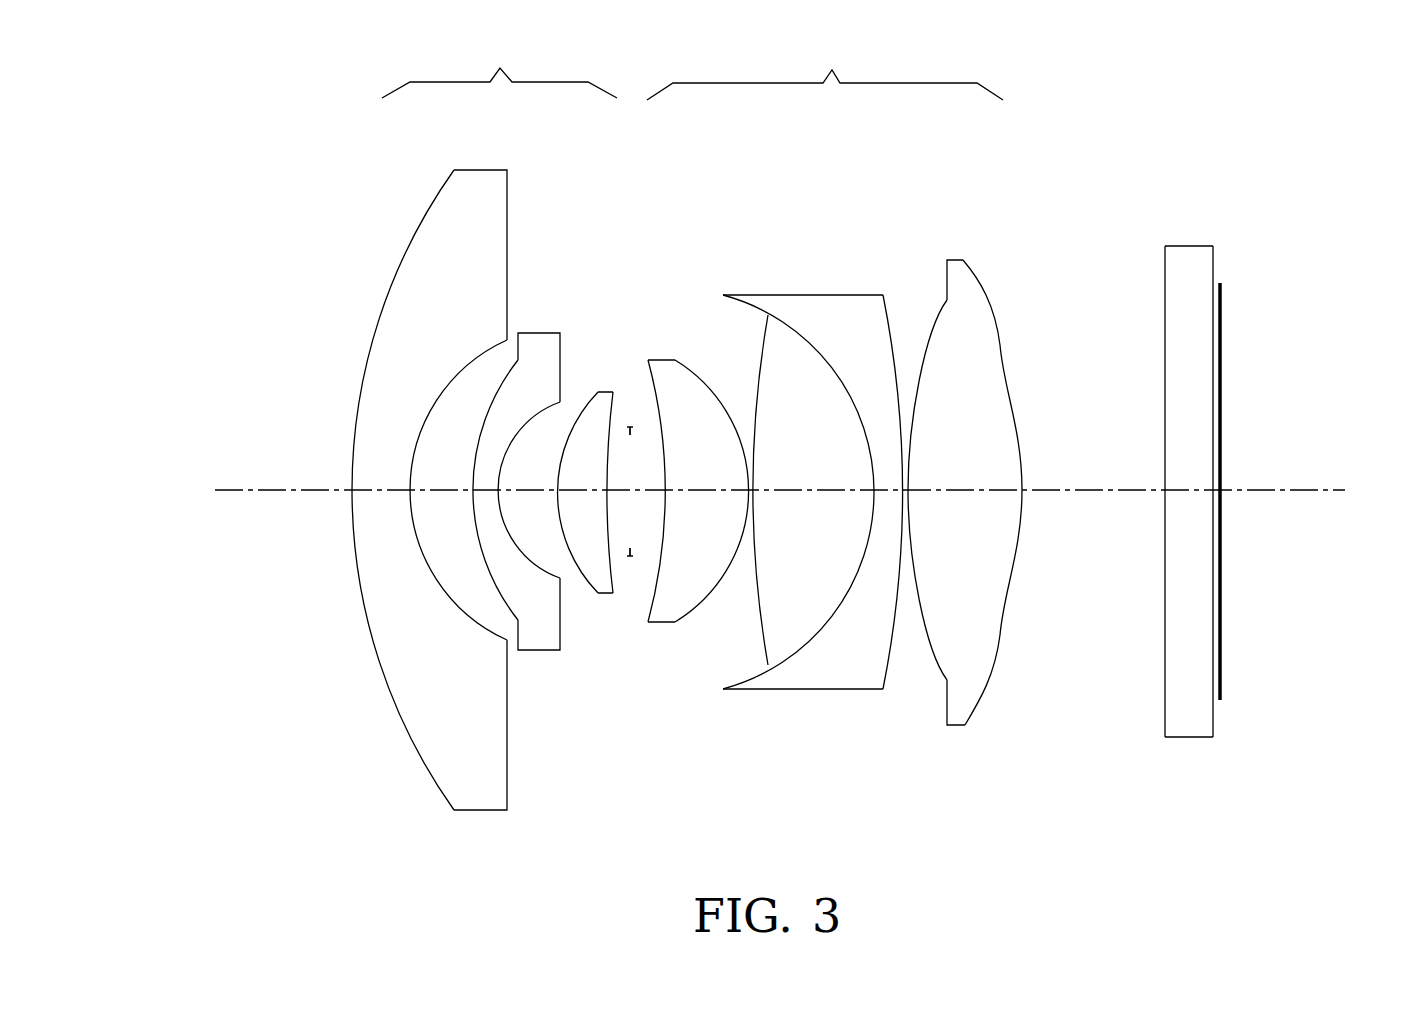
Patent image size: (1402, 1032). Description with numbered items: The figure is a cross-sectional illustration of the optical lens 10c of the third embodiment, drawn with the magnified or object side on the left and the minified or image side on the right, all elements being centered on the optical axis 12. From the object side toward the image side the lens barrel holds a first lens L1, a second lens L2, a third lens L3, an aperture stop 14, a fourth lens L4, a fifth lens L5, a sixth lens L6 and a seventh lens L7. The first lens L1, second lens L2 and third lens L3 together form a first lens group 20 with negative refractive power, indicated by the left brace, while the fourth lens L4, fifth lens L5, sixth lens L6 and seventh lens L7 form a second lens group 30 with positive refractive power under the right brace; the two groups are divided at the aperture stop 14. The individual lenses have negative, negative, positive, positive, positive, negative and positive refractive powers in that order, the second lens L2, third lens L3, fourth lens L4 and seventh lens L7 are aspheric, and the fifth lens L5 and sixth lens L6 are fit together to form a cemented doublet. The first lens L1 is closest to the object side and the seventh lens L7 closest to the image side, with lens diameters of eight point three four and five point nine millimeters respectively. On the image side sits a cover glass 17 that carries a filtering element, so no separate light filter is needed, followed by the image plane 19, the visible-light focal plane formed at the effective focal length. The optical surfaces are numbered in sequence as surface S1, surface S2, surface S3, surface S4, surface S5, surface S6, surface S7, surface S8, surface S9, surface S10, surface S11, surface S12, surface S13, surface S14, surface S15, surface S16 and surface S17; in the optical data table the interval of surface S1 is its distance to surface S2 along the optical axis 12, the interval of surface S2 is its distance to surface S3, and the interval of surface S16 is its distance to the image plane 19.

The optical lens 10c is at (188, 43).
The optical axis 12 is at (288, 492).
The aperture stop 14 is at (630, 428).
The cover glass 17 is at (1188, 258).
The image plane 19 is at (1220, 303).
The first lens group 20 is at (480, 444).
The second lens group 30 is at (841, 411).
The first lens L1 is at (485, 175).
The second lens L2 is at (534, 347).
The third lens L3 is at (608, 387).
The fourth lens L4 is at (656, 368).
The fifth lens L5 is at (762, 378).
The sixth lens L6 is at (822, 302).
The seventh lens L7 is at (955, 272).
The surface S1 is at (397, 713).
The surface S2 is at (507, 645).
The surface S3 is at (512, 618).
The image-side surface of second lens S4 is at (566, 590).
The object-side surface of third lens S5 is at (583, 556).
The image-side surface of third lens S6 is at (612, 557).
The aperture stop surface S7 is at (630, 555).
The object-side surface of fourth lens S8 is at (650, 607).
The image-side surface of fourth lens S9 is at (720, 580).
The object-side surface of fifth lens S10 is at (722, 692).
The cemented surface between fifth and sixth lens S11 is at (753, 692).
The image-side surface of sixth lens S12 is at (890, 618).
The object-side surface of seventh lens S13 is at (943, 673).
The image-side surface of seventh lens S14 is at (1003, 660).
The object-side surface of filter S15 is at (1165, 677).
The surface S16 is at (1213, 700).
The image plane S17 is at (1222, 630).